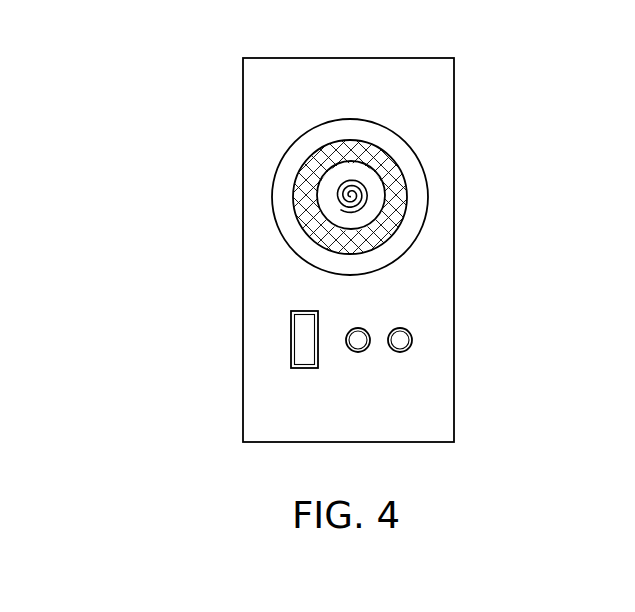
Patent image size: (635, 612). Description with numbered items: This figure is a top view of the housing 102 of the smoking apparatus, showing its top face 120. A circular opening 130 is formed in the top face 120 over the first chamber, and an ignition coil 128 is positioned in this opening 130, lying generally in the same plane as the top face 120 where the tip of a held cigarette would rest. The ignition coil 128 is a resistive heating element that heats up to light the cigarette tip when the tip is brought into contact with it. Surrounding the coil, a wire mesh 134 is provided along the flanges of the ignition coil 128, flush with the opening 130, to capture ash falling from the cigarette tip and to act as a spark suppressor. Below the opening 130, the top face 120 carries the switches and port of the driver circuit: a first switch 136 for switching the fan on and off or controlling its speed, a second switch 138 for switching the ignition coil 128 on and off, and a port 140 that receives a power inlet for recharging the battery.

The housing 102 is at (488, 90).
The top face 120 is at (377, 412).
The ignition coil 128 is at (393, 162).
The opening 130 is at (270, 153).
The wire mesh 134 is at (395, 238).
The first switch 136 is at (412, 336).
The second switch 138 is at (358, 352).
The port 140 is at (291, 340).